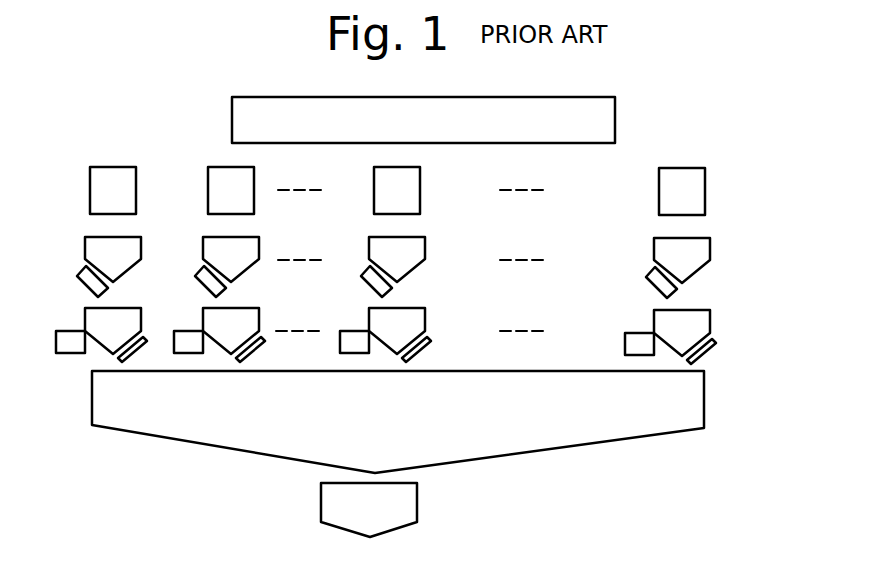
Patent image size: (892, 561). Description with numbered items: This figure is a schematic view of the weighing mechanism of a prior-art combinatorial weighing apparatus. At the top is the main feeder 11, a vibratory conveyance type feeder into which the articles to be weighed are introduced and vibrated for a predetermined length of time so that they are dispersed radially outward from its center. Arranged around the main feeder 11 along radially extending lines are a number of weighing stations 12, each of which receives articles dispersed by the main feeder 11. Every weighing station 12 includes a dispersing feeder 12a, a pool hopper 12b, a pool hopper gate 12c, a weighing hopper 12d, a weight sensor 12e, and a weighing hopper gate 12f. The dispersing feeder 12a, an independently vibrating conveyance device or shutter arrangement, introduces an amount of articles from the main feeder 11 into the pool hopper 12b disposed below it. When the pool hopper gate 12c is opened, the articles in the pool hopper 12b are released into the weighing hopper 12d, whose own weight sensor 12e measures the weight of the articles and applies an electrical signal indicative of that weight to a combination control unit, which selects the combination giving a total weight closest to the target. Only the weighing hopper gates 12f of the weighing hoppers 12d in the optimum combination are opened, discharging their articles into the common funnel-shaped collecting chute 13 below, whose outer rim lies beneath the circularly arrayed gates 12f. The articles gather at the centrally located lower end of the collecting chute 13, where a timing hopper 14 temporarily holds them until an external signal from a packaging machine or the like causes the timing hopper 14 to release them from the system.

The main feeder 11 is at (447, 100).
The weighing station 12 is at (107, 156).
The dispersing feeder 12a is at (136, 167).
The pool hopper 12b is at (141, 242).
The pool hopper gate 12c is at (78, 277).
The weighing hopper 12d is at (141, 312).
The weight sensor 12e is at (64, 348).
The weighing hopper gate 12f is at (143, 341).
The collecting chute 13 is at (583, 436).
The timing hopper 14 is at (382, 523).